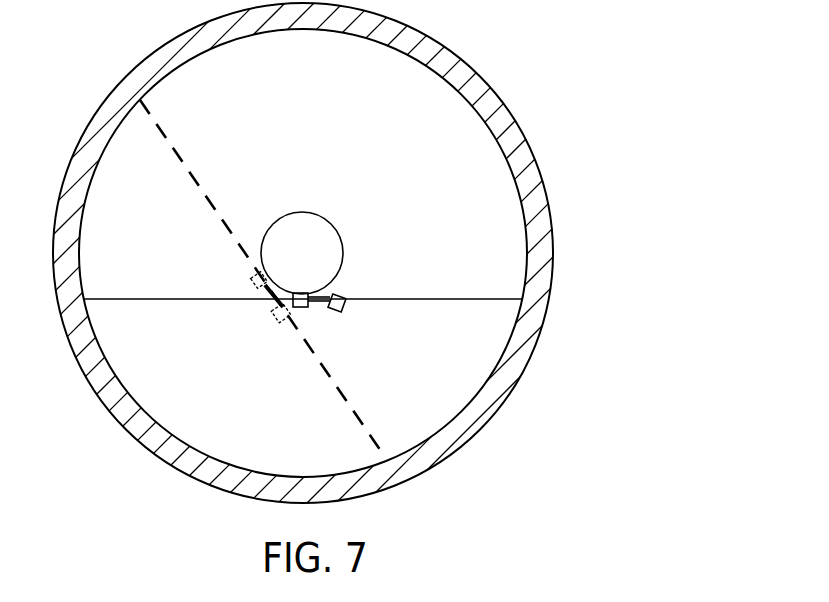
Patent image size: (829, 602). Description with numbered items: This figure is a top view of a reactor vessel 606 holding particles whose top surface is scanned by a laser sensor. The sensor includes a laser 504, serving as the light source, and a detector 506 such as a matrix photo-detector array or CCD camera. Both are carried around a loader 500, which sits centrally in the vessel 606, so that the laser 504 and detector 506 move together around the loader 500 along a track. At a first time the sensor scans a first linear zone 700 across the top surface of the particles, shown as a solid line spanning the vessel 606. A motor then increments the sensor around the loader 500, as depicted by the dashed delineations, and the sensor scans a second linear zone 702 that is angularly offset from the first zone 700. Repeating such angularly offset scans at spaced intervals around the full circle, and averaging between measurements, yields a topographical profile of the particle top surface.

The vessel 606 is at (443, 47).
The first linear zone 700 is at (174, 302).
The second linear zone 702 is at (174, 147).
The loader 500 is at (323, 214).
The laser 504 is at (304, 307).
The detector 506 is at (343, 296).